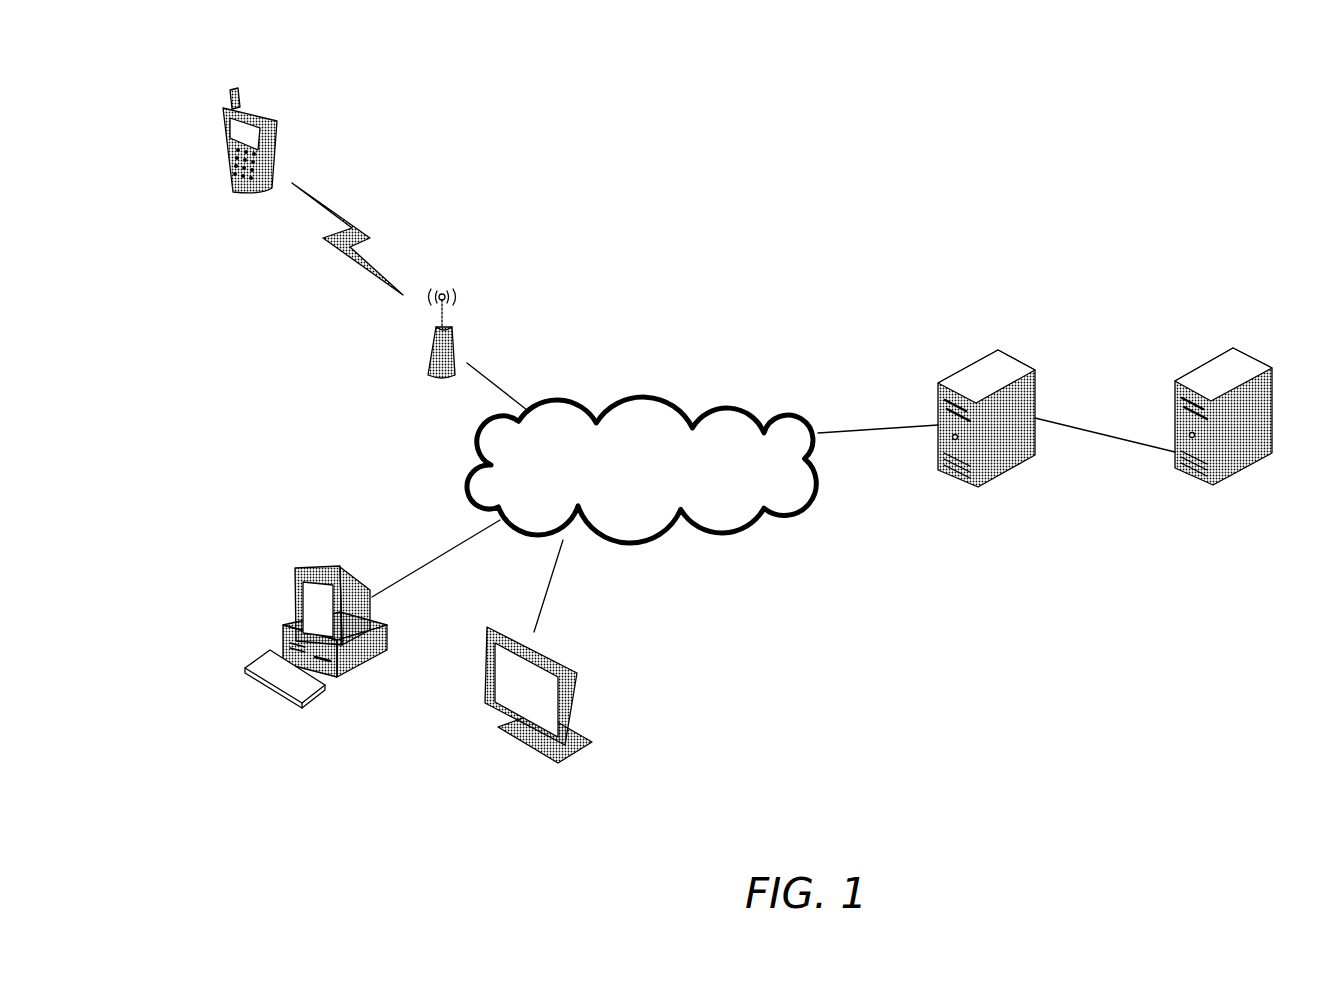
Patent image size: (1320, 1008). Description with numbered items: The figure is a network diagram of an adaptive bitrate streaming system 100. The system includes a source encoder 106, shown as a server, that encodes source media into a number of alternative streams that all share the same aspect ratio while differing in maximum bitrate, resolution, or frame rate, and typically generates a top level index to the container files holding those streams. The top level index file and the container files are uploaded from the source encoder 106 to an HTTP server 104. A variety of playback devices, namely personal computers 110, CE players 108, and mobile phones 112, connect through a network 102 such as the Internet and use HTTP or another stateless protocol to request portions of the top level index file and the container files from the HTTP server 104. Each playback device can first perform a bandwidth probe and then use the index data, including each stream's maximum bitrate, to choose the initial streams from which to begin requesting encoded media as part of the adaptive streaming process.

The adaptive bitrate streaming system 100 is at (792, 238).
The network 102 is at (677, 533).
The HTTP server 104 is at (1005, 366).
The source encoder 106 is at (1242, 348).
The CE player 108 is at (497, 712).
The personal computer 110 is at (277, 692).
The mobile phone 112 is at (265, 113).